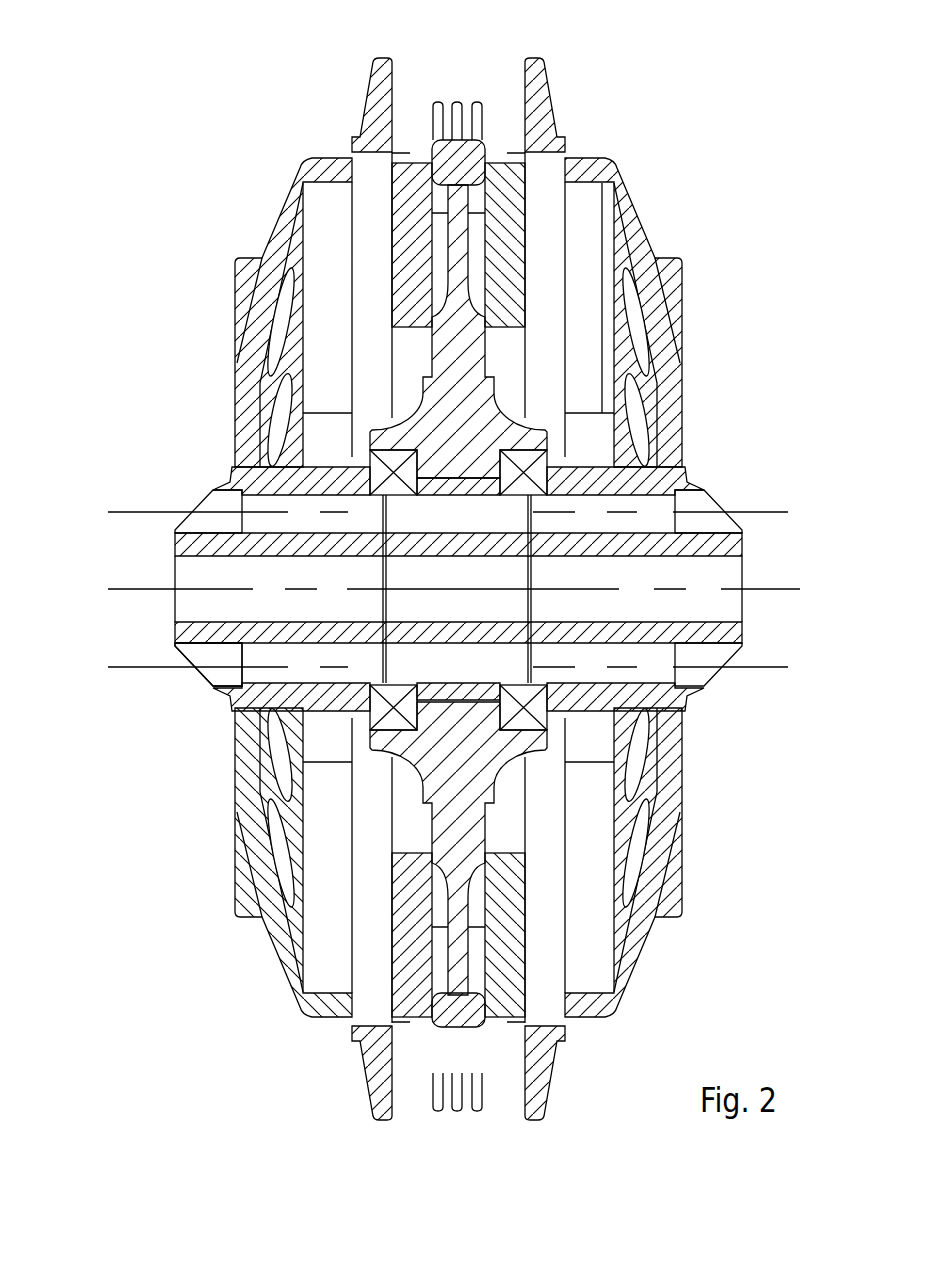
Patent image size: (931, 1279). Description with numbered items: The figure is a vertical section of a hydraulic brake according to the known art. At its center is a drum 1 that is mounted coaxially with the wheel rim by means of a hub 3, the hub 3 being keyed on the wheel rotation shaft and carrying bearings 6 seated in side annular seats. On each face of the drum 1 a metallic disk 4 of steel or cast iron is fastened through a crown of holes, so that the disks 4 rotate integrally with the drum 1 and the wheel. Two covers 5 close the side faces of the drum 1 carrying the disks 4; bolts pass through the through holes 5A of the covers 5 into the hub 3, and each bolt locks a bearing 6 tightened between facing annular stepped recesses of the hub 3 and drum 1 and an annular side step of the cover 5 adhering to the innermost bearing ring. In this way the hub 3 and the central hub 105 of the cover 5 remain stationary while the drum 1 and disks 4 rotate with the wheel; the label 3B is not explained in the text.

The central drum 1 is at (368, 98).
The hub 3 is at (453, 556).
The metallic disk 4 is at (412, 163).
The cover 5 is at (297, 170).
The bearing 6 is at (370, 459).
The central hub of the cover 105 is at (543, 690).
The through holes of the covers 5A is at (222, 673).
The shaft end portion 3B is at (186, 733).